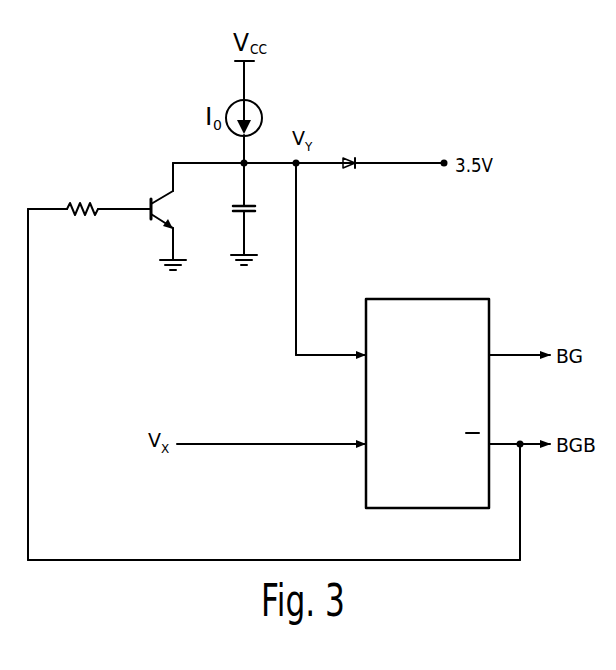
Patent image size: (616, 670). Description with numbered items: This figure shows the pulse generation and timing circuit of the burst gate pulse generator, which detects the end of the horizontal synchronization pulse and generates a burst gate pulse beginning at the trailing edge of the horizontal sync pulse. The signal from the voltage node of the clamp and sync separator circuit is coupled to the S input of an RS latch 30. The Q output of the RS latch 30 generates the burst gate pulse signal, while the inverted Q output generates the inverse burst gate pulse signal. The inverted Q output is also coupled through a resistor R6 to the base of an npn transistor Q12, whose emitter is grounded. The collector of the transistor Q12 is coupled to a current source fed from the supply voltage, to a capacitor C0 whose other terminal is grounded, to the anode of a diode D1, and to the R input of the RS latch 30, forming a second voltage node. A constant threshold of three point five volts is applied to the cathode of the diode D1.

The RS latch 30 is at (489, 316).
The npn transistor Q12 is at (181, 216).
The resistor R6 is at (82, 196).
The capacitor C0 is at (261, 210).
The diode D1 is at (348, 147).